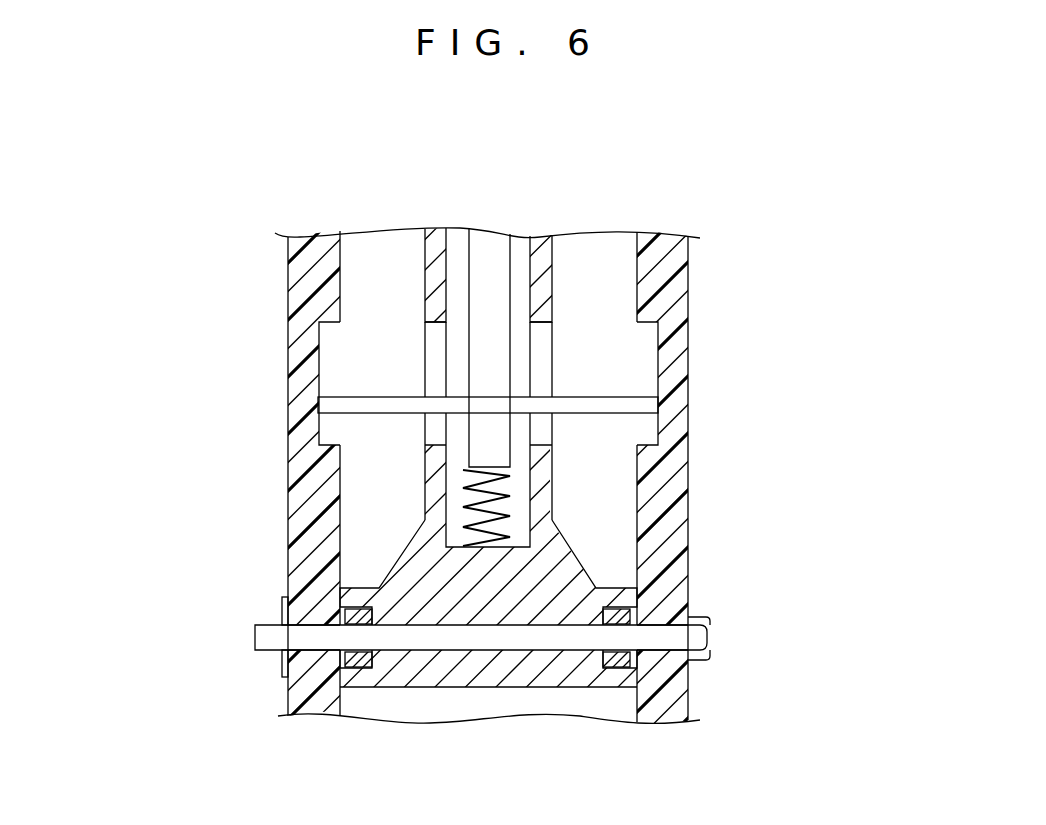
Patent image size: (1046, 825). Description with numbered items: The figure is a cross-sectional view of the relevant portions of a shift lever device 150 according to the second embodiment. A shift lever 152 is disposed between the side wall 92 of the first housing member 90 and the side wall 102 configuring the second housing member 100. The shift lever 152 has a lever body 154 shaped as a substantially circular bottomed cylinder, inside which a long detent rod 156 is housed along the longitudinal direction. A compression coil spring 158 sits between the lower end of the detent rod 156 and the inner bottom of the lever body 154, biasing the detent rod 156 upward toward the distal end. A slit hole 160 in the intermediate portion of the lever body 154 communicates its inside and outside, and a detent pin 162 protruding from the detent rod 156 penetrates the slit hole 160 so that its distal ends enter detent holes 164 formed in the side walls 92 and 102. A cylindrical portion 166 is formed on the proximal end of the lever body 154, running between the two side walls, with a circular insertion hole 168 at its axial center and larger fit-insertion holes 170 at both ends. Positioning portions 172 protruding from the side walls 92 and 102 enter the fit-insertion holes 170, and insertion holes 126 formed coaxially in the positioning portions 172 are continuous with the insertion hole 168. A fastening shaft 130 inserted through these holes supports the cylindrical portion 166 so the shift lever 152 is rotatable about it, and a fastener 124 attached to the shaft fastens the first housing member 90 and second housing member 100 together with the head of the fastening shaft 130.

The first housing member 90 is at (721, 477).
The side wall 92 is at (690, 292).
The second housing member 100 is at (523, 475).
The side wall 102 is at (288, 290).
The fastener 124 is at (282, 615).
The insertion holes 126 is at (308, 648).
The fastening shaft 130 is at (489, 623).
The shift lever device 150 is at (523, 444).
The shift lever 152 is at (471, 323).
The lever body 154 is at (552, 270).
The detent rod 156 is at (465, 298).
The compression coil spring 158 is at (508, 513).
The slit hole 160 is at (537, 327).
The detent pin 162 is at (397, 397).
The detent holes 164 is at (315, 347).
The cylindrical portion 166 is at (494, 688).
The insertion hole 168 is at (432, 650).
The fit-insertion holes 170 is at (372, 650).
The positioning portions 172 is at (353, 603).